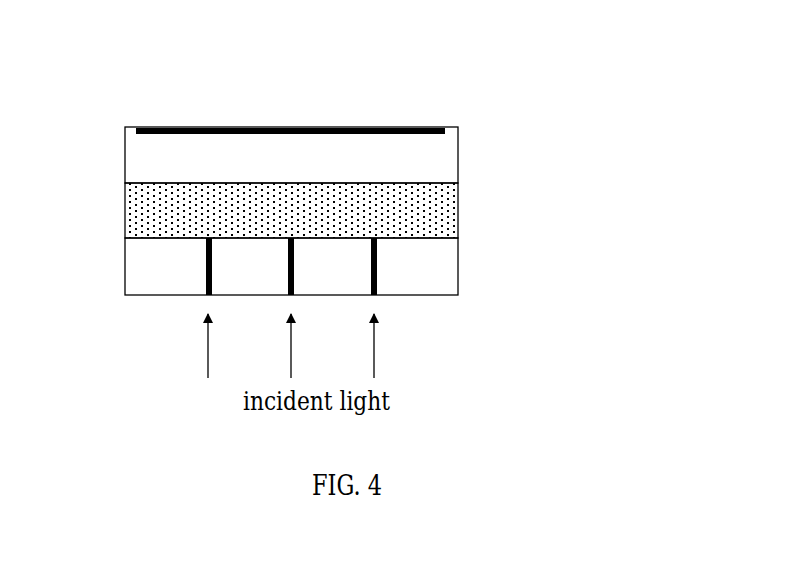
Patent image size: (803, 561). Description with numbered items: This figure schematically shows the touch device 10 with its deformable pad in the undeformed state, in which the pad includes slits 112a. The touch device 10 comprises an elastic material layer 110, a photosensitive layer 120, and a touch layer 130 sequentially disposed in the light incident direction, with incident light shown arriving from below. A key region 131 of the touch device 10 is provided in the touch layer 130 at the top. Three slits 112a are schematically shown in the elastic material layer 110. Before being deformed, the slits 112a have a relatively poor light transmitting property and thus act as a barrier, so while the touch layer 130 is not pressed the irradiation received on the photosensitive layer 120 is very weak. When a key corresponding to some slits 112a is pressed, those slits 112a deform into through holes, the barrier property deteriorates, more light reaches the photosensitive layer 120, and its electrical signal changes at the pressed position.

The touch device 10 is at (349, 104).
The elastic material layer 110 is at (453, 256).
The slit 112a is at (378, 283).
The photosensitive layer 120 is at (430, 205).
The touch layer 130 is at (428, 148).
The key region 131 is at (400, 127).